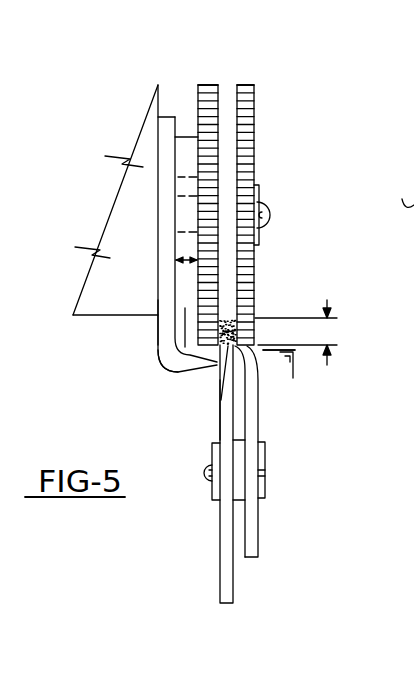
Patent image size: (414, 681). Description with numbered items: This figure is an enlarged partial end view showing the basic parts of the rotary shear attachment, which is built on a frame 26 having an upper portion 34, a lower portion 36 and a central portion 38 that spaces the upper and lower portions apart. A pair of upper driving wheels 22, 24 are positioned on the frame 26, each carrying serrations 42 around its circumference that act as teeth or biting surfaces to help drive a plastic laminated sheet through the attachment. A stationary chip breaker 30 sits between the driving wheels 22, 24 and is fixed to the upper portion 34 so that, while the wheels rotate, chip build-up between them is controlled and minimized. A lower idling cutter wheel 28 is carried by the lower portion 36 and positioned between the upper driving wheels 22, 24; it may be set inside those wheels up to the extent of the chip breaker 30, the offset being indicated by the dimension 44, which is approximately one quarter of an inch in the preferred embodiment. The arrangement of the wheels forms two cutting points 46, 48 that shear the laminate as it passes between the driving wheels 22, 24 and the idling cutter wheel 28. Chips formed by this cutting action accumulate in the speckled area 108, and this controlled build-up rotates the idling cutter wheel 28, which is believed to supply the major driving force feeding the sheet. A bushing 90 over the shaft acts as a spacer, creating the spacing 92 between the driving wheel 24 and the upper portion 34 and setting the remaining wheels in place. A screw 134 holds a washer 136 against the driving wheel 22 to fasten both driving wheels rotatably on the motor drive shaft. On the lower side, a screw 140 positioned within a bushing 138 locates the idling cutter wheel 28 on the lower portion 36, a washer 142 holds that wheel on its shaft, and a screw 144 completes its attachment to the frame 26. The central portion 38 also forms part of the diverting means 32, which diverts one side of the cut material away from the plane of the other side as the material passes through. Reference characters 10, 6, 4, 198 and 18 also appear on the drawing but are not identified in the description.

The electrical connector 10 is at (157, 60).
The section line 6- 6 is at (234, 85).
The section line 4- 4 is at (180, 107).
The driving wheel 22 is at (255, 102).
The driving wheel 24 is at (205, 152).
The serrations 42 is at (217, 88).
The chip breaker 30 is at (222, 293).
The upper portion 34 is at (165, 198).
The spacing 92 is at (190, 263).
The bushing 90 is at (185, 146).
The cutting point 48 is at (170, 370).
The diverting means 32 is at (141, 375).
The central portion 38 is at (216, 350).
The screw 134 is at (270, 214).
The washer 136 is at (262, 240).
The dimension 44 is at (327, 331).
The pin 198 is at (338, 355).
The circuit board 18 is at (338, 378).
The cutting point 46 is at (248, 352).
The lower portion 36 is at (250, 531).
The frame 26 is at (257, 397).
The lower idling cutter wheel 28 is at (227, 588).
The area 108 is at (220, 398).
The screw 144 is at (212, 482).
The washer 142 is at (212, 500).
The bushing 138 is at (283, 438).
The screw 140 is at (266, 488).